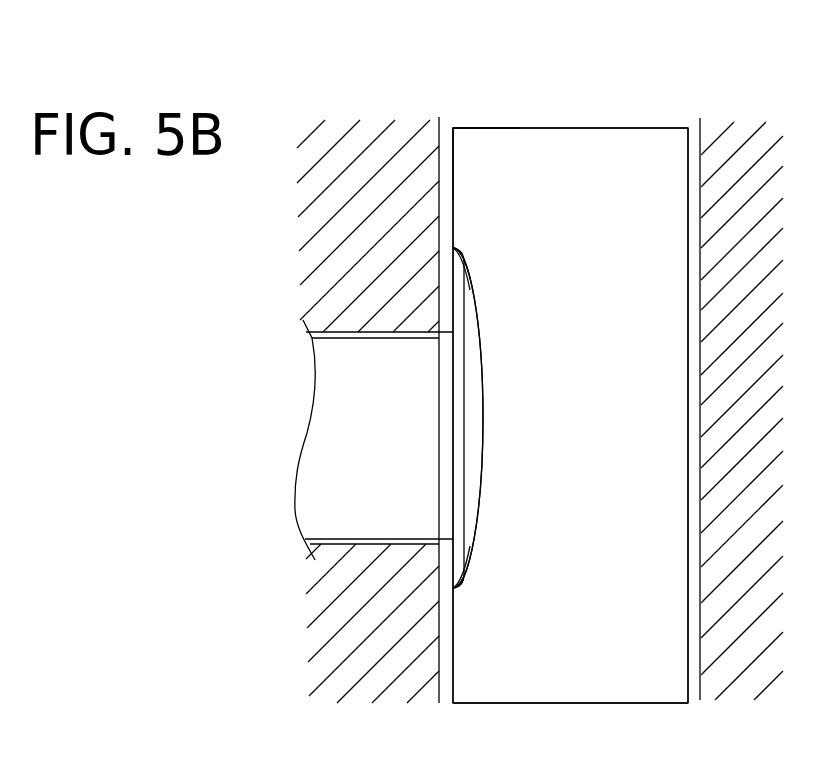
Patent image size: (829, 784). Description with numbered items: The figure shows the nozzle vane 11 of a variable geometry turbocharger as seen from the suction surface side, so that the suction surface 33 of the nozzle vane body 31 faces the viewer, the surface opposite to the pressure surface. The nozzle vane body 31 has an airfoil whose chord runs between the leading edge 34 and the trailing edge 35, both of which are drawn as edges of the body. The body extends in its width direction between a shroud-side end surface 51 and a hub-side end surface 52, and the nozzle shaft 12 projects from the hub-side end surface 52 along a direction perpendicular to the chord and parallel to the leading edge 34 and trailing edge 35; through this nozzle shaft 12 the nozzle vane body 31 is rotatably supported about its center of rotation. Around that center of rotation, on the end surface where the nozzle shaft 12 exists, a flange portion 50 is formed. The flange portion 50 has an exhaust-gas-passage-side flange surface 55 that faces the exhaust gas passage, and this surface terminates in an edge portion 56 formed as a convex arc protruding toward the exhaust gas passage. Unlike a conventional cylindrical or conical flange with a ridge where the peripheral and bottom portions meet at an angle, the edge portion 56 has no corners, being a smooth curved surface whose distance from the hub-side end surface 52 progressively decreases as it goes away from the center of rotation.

The nozzle vane 11 is at (563, 104).
The nozzle shaft 12 is at (387, 459).
The nozzle vane body 31 is at (648, 300).
The suction surface 33 is at (515, 155).
The leading edge 34 is at (575, 705).
The trailing edge 35 is at (596, 128).
The flange portion 50 is at (466, 408).
The shroud-side end surface 51 is at (690, 690).
The hub-side end surface 52 is at (453, 683).
The exhaust-gas-passage-side flange surface 55 is at (489, 454).
The edge portion 56 is at (472, 261).